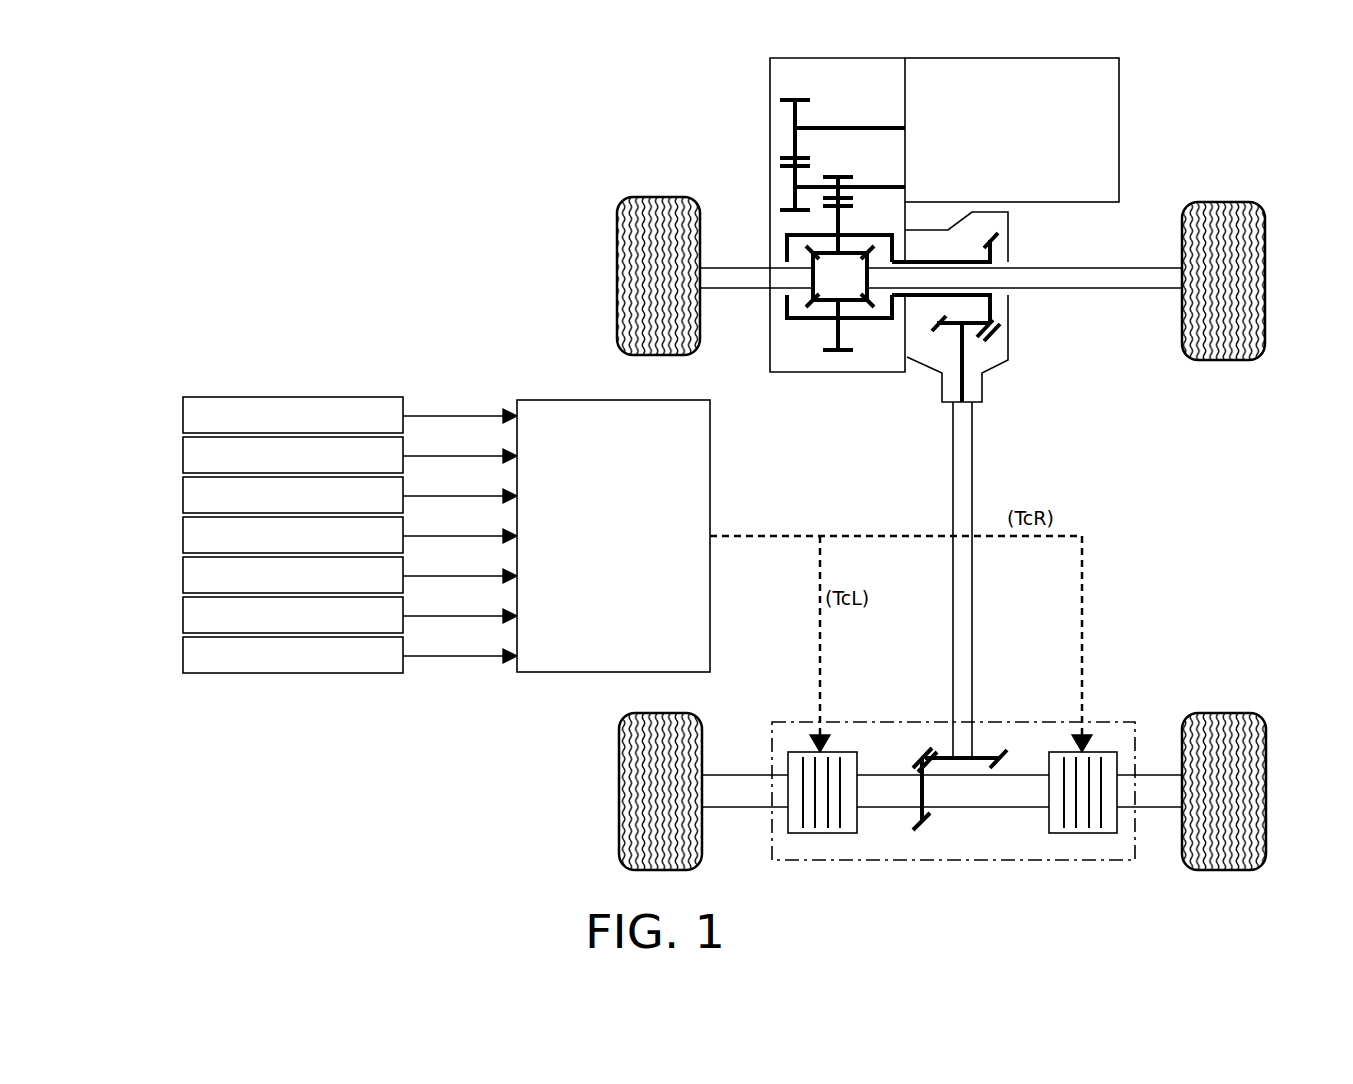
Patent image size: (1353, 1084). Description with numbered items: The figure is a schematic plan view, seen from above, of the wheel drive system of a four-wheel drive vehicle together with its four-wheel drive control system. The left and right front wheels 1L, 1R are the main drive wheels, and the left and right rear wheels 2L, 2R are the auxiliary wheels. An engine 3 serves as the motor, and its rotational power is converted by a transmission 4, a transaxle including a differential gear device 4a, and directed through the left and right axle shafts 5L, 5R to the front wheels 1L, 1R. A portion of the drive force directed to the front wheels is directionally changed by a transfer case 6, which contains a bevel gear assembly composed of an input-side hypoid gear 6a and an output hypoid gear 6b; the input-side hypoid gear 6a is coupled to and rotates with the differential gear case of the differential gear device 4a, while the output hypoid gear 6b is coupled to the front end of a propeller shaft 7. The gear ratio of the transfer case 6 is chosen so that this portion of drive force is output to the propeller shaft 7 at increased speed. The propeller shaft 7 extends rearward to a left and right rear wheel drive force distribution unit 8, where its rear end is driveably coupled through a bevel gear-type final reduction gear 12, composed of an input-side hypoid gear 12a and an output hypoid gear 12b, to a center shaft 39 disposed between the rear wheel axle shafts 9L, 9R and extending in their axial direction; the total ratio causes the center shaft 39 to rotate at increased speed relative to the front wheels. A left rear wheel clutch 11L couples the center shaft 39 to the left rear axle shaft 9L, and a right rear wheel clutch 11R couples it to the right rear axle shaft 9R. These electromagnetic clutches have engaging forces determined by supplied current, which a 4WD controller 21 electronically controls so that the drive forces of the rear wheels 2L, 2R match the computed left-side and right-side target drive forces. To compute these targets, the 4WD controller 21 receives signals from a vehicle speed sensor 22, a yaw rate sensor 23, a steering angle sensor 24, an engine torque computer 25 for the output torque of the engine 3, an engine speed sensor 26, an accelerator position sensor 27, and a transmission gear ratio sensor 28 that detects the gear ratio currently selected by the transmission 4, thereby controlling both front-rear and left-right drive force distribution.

The left front wheel 1L is at (645, 198).
The right front wheel 1R is at (1226, 202).
The left rear wheel 2L is at (619, 742).
The right rear wheel 2R is at (1226, 713).
The engine 3 is at (1119, 74).
The transmission 4 is at (770, 76).
The differential gear device 4a is at (797, 318).
The left axle shaft 5L is at (742, 267).
The right axle shaft 5R is at (1111, 267).
The transfer case 6 is at (1010, 336).
The input-side hypoid gear 6a is at (992, 302).
The output hypoid gear 6b is at (975, 328).
The propeller shaft 7 is at (974, 455).
The left and right rear wheel drive force distribution unit 8 is at (1030, 722).
The left rear wheel axle shaft 9L is at (740, 810).
The right rear wheel axle shaft 9R is at (1163, 810).
The left rear wheel clutch 11L is at (815, 834).
The right rear wheel clutch 11R is at (1092, 834).
The final reduction gear 12 is at (840, 692).
The input-side hypoid gear 12a is at (920, 750).
The output hypoid gear 12b is at (912, 762).
The 4WD controller 21 is at (546, 400).
The vehicle speed sensor 22 is at (183, 412).
The yaw rate sensor 23 is at (183, 452).
The steering angle sensor 24 is at (183, 492).
The engine torque computer 25 is at (183, 532).
The engine speed sensor 26 is at (183, 572).
The accelerator position sensor 27 is at (183, 612).
The transmission gear ratio sensor 28 is at (183, 652).
The center shaft 39 is at (1000, 808).